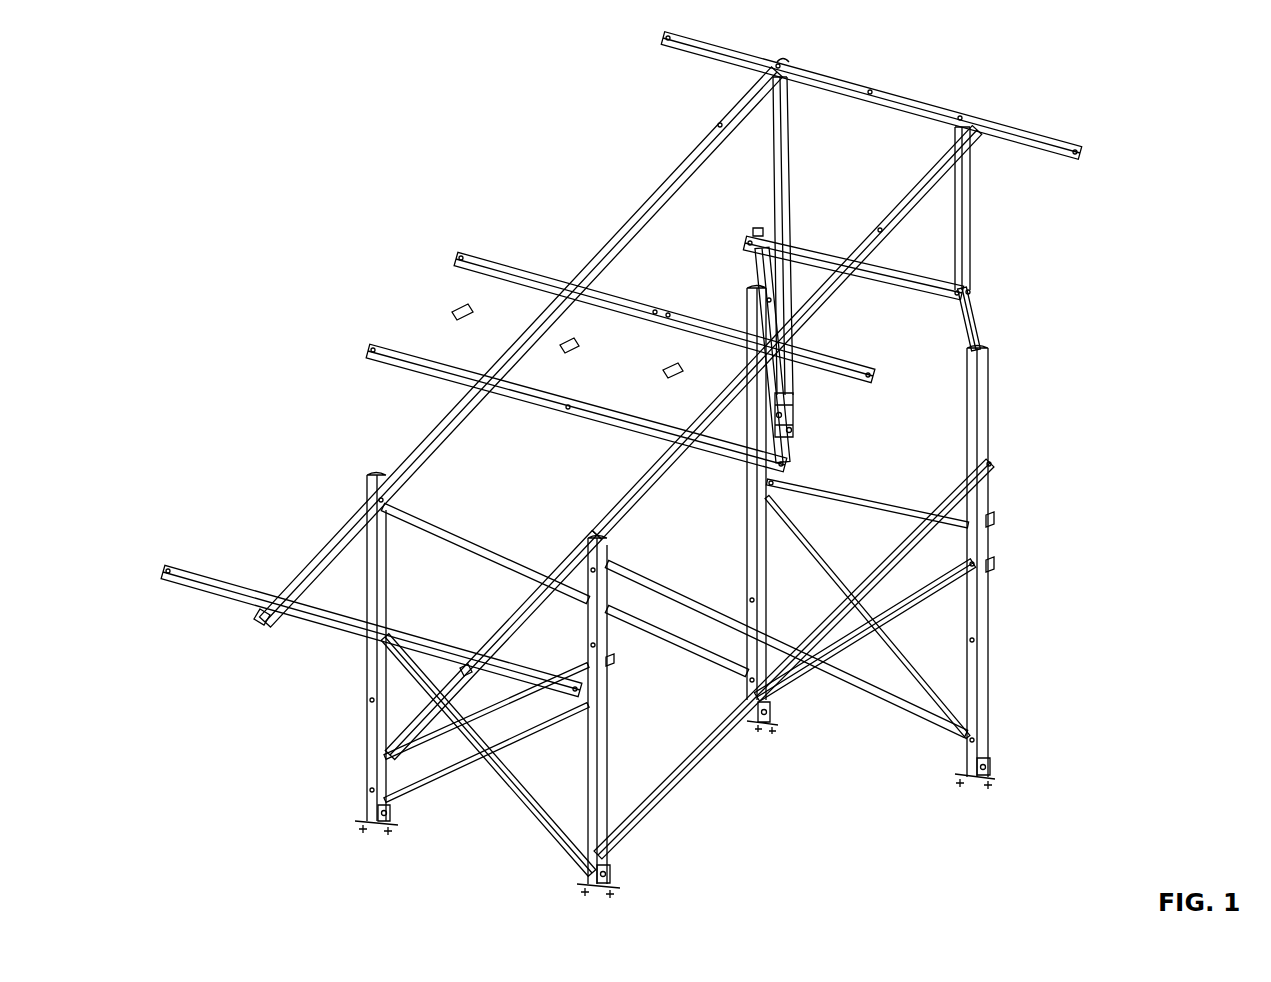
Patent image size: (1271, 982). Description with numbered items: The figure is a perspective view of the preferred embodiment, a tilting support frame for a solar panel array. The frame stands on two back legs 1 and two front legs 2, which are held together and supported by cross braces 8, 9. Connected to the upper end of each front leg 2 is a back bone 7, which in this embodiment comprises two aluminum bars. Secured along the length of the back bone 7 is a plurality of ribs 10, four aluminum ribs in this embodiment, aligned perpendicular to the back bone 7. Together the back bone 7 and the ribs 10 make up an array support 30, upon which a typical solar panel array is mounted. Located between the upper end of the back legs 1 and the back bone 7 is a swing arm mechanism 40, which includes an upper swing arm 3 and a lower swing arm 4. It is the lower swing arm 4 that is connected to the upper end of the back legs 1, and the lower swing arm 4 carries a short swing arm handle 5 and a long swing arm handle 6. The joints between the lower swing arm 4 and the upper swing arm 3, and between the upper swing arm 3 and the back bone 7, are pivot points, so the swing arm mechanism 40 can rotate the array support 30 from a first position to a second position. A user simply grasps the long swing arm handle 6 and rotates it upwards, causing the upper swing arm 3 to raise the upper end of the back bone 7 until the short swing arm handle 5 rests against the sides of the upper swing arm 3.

The back leg 1 is at (750, 563).
The front leg 2 is at (370, 715).
The upper swing arm 3 is at (783, 143).
The lower swing arm 4 is at (756, 274).
The short swing arm handle 5 is at (903, 275).
The long swing arm handle 6 is at (850, 496).
The back bone 7 is at (445, 422).
The cross brace 8 is at (693, 758).
The cross brace 9 is at (433, 770).
The rib 10 is at (478, 262).
The array support 30 is at (978, 118).
The swing arm mechanism 40 is at (982, 284).